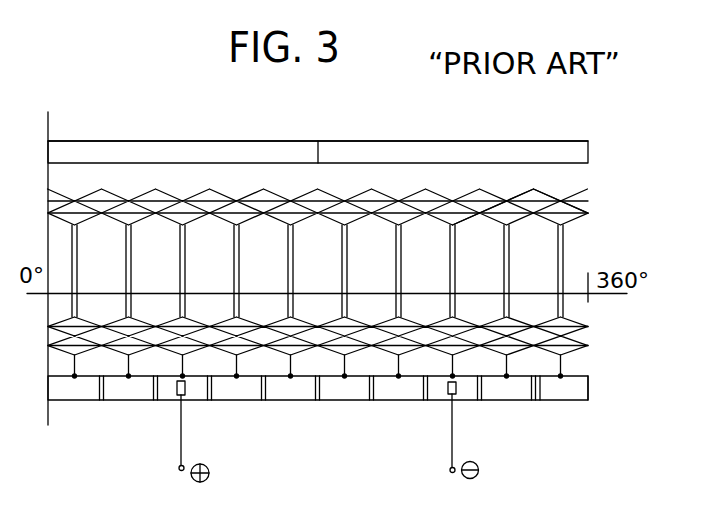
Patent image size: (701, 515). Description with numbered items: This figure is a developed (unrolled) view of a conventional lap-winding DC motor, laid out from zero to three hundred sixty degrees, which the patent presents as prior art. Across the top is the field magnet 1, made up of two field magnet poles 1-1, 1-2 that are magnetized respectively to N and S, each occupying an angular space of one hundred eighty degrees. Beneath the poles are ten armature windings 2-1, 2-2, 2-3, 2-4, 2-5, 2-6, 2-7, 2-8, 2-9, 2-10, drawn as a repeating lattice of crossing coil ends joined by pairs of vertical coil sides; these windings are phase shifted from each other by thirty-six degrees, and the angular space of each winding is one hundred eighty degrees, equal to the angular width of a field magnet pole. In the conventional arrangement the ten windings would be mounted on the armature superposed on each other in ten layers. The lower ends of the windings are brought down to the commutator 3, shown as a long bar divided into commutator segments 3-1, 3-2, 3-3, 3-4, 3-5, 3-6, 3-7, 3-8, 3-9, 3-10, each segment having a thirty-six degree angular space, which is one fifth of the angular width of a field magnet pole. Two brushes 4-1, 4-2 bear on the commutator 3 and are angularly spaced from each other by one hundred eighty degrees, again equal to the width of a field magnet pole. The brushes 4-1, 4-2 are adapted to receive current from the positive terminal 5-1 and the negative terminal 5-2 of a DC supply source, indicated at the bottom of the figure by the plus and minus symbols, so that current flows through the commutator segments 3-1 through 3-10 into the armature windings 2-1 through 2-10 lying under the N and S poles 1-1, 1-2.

The field magnet 1 is at (167, 113).
The field magnet pole 1-1 is at (160, 146).
The field magnet pole 1-2 is at (424, 146).
The armature winding 2-1 is at (71, 192).
The armature winding 2-2 is at (108, 191).
The armature winding 2-3 is at (162, 191).
The armature winding 2-4 is at (216, 191).
The armature winding 2-5 is at (270, 191).
The armature winding 2-6 is at (324, 191).
The armature winding 2-7 is at (378, 191).
The armature winding 2-8 is at (432, 191).
The armature winding 2-9 is at (486, 191).
The armature winding 2-10 is at (540, 191).
The commutator 3 is at (588, 388).
The commutator segment 3-1 is at (78, 401).
The commutator segment 3-2 is at (123, 401).
The commutator segment 3-3 is at (166, 401).
The commutator segment 3-4 is at (229, 401).
The commutator segment 3-5 is at (286, 401).
The commutator segment 3-6 is at (331, 401).
The commutator segment 3-7 is at (384, 401).
The commutator segment 3-8 is at (436, 401).
The commutator segment 3-9 is at (501, 401).
The commutator segment 3-10 is at (554, 401).
The brush 4-1 is at (185, 388).
The brush 4-2 is at (456, 388).
The positive terminal 5-1 is at (177, 473).
The negative terminal 5-2 is at (447, 476).